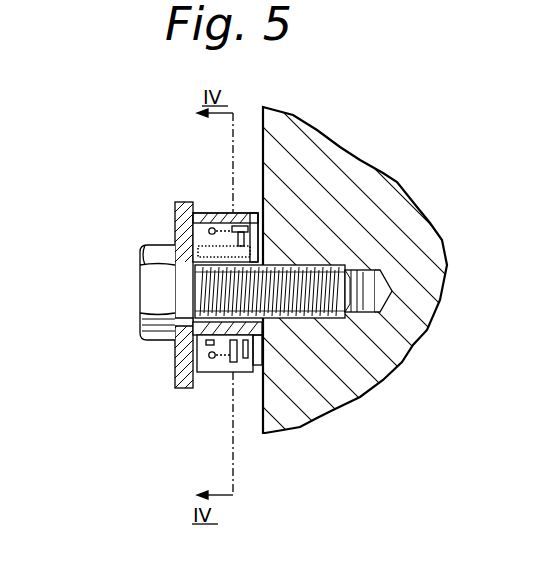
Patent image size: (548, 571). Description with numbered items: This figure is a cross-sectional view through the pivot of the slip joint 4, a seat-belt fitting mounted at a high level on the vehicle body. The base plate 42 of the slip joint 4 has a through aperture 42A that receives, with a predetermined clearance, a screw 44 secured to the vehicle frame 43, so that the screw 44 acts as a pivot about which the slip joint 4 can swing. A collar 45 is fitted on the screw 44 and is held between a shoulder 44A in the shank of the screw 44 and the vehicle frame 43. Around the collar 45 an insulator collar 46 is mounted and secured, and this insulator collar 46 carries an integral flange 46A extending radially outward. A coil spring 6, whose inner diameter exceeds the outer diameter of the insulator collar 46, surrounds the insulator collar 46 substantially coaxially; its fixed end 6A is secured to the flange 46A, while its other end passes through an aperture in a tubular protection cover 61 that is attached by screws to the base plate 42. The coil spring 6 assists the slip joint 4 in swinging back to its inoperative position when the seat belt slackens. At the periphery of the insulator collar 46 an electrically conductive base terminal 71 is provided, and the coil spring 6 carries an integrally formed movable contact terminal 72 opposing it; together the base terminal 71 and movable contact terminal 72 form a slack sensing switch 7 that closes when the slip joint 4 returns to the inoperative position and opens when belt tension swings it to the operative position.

The slip joint 4 is at (228, 280).
The coil spring 6 is at (261, 164).
The tubular protection cover 61 is at (218, 213).
The fixed end 6A is at (252, 212).
The insulator collar 46 is at (208, 229).
The flange 46A is at (258, 240).
The screw 44 is at (125, 292).
The collar 45 is at (193, 288).
The shoulder 44A is at (185, 300).
The through aperture 42A is at (185, 322).
The base plate 42 is at (177, 370).
The movable contact terminal 72 is at (196, 384).
The base terminal 71 is at (220, 374).
The slack sensing switch 7 is at (195, 408).
The vehicle frame 43 is at (370, 374).